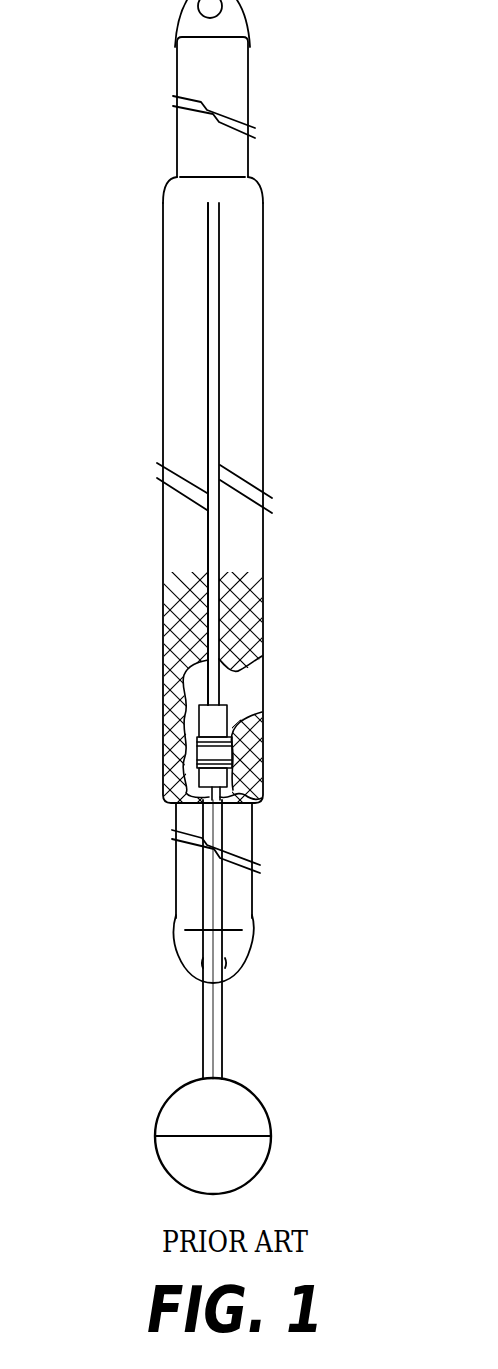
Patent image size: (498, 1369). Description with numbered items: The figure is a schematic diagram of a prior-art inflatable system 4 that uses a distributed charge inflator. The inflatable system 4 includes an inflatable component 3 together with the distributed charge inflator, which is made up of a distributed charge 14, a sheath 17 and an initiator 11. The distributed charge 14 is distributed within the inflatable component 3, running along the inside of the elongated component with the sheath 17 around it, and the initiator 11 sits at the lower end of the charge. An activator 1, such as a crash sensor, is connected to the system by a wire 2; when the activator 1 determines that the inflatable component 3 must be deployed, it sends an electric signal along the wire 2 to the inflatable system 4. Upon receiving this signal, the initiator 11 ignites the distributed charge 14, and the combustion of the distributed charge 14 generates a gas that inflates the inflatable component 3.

The activator 1 is at (158, 1143).
The wire 2 is at (203, 1035).
The inflatable component 3 is at (263, 609).
The inflatable system 4 is at (163, 695).
The initiator 11 is at (243, 797).
The distributed charge 14 is at (219, 383).
The sheath 17 is at (208, 363).